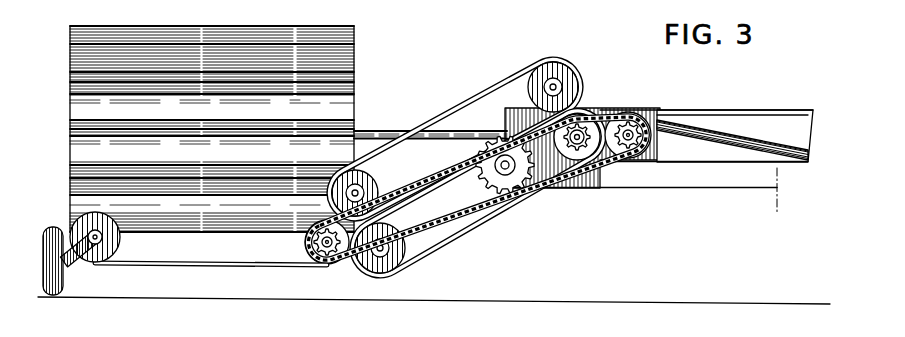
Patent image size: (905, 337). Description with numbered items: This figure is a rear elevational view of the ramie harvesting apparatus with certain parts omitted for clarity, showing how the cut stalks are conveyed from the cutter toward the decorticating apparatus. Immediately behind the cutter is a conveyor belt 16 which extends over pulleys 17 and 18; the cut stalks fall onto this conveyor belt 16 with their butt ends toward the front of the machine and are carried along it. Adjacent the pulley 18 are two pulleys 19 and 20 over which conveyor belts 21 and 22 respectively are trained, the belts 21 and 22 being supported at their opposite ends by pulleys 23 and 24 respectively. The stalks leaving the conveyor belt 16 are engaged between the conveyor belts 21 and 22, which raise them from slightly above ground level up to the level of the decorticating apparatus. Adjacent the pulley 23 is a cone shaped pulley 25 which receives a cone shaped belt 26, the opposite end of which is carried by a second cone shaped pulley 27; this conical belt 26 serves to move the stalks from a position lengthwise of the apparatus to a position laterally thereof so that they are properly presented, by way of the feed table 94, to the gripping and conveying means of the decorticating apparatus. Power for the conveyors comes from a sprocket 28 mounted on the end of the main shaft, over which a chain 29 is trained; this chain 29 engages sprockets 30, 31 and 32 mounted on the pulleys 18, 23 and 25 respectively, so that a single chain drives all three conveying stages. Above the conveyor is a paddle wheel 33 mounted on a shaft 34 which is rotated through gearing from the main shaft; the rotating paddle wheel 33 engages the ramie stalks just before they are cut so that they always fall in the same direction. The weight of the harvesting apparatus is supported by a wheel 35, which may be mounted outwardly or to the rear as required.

The conveyor belt 16 is at (197, 264).
The pulley 17 is at (110, 259).
The pulley 18 is at (323, 264).
The pulley 19 is at (380, 267).
The pulley 20 is at (372, 179).
The conveyor belt 21 is at (423, 256).
The conveyor belt 22 is at (454, 109).
The pulley 23 is at (577, 113).
The pulley 24 is at (567, 64).
The cone shaped pulley 25 is at (645, 161).
The cone shaped belt 26 is at (710, 167).
The cone shaped pulley 27 is at (813, 111).
The sprocket 28 is at (487, 181).
The chain 29 is at (542, 184).
The sprocket 30 is at (305, 248).
The sprocket 31 is at (582, 160).
The sprocket 32 is at (632, 127).
The paddle wheel 33 is at (318, 53).
The shaft 34 is at (373, 132).
The wheel 35 is at (60, 286).
The feed table 94 is at (515, 107).